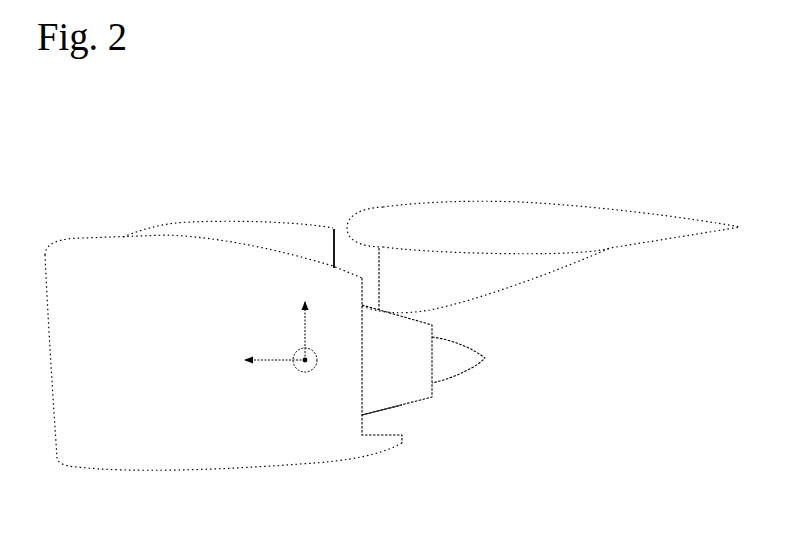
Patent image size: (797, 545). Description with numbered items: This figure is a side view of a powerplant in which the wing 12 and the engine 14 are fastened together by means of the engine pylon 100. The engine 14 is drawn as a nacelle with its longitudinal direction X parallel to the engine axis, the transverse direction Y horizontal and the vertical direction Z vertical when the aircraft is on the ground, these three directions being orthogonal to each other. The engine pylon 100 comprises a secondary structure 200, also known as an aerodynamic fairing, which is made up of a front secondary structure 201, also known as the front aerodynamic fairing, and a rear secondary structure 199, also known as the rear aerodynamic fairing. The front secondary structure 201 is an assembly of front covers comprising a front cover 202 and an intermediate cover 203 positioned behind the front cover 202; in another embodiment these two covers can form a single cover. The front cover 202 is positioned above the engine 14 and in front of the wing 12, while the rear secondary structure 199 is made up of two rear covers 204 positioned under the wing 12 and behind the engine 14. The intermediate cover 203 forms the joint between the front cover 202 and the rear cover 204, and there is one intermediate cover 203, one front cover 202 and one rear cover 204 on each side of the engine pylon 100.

The wing 12 is at (562, 218).
The engine 14 is at (147, 437).
The engine pylon 100 is at (608, 330).
The rear secondary structure 199 is at (535, 338).
The secondary structure 200 is at (468, 175).
The front secondary structure 201 is at (272, 195).
The front cover 202 is at (195, 230).
The intermediate cover 203 is at (343, 240).
The rear cover 204 is at (490, 289).